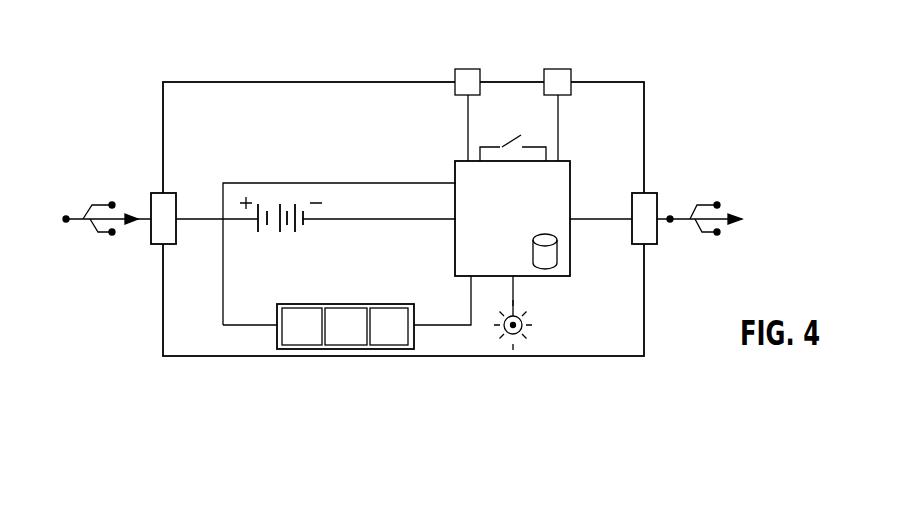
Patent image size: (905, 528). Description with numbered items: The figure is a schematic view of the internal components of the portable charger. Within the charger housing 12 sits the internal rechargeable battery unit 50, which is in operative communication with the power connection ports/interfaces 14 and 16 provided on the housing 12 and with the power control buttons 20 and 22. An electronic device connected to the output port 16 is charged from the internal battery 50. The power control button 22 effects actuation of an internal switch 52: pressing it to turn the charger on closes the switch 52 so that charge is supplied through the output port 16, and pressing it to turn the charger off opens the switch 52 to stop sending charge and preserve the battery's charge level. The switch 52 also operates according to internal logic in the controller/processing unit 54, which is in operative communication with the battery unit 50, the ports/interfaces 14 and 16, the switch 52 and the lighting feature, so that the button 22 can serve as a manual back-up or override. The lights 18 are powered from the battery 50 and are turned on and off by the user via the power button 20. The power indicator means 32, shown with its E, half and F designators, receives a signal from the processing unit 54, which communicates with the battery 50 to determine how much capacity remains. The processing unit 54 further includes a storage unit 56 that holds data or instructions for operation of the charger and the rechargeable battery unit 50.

The charger housing 12 is at (195, 95).
The power connection port/interface 14 is at (151, 200).
The output port 16 is at (657, 203).
The lights 18 is at (513, 337).
The power button 20 is at (556, 69).
The power control button 22 is at (468, 69).
The power indicator means 32 is at (345, 349).
The internal rechargeable battery unit 50 is at (275, 193).
The internal switch 52 is at (507, 138).
The controller/processing unit 54 is at (570, 261).
The storage unit 56 is at (532, 250).